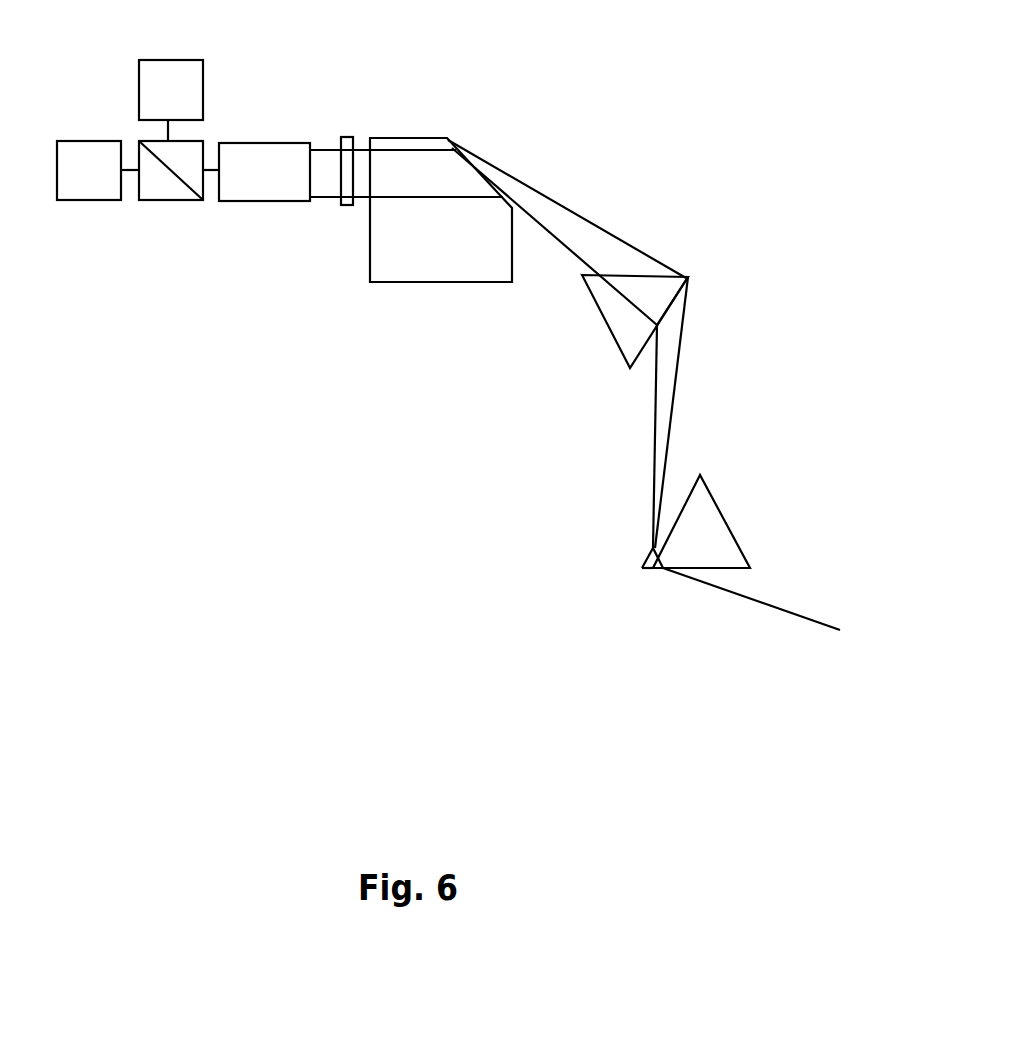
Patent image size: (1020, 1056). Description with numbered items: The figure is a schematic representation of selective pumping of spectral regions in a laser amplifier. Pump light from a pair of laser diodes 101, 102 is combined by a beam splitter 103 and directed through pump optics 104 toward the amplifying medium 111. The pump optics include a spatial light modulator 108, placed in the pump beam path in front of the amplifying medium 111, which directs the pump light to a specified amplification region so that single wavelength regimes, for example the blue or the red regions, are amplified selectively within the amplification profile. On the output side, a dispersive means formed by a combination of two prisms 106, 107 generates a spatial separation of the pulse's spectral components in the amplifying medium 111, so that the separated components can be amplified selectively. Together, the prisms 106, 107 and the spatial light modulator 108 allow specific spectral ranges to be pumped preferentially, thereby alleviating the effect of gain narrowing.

The laser diode 101 is at (108, 202).
The laser diode 102 is at (173, 60).
The beam splitter 103 is at (168, 200).
The pump optics 104 is at (298, 202).
The prism 106 is at (607, 337).
The prism 107 is at (703, 572).
The spatial light modulator 108 is at (340, 163).
The amplifying medium 111 is at (453, 283).